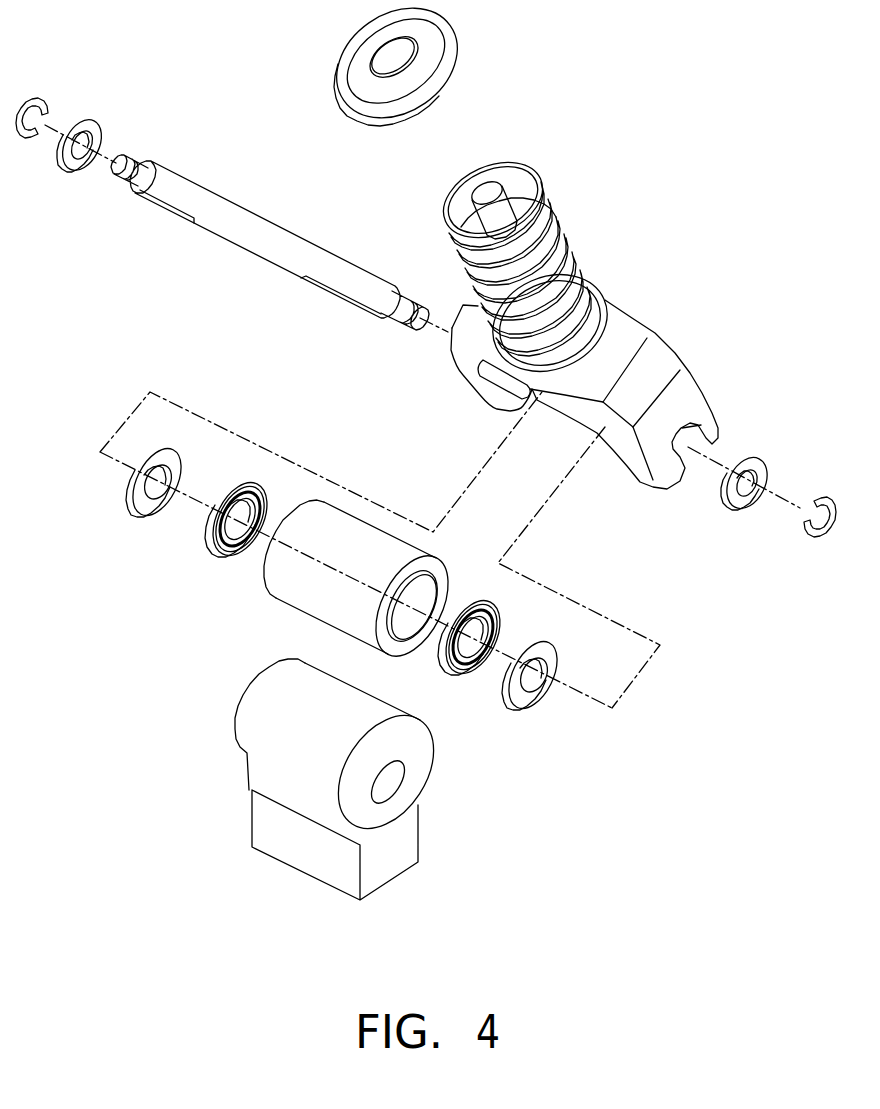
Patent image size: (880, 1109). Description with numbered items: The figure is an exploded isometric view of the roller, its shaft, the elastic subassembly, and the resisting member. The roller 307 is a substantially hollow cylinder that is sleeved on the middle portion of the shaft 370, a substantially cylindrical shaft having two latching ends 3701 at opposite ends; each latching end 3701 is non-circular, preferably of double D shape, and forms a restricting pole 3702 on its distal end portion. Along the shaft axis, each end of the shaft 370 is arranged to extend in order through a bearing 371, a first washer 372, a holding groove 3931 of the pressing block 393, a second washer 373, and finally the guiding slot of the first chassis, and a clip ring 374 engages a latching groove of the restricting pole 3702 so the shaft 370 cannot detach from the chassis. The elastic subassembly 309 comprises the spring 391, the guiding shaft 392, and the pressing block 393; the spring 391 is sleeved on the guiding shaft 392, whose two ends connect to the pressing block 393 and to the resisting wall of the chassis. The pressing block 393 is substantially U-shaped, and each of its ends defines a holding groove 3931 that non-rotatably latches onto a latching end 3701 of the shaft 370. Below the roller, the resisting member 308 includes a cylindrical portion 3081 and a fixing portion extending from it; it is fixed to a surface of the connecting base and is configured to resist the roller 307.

The roller 307 is at (292, 575).
The resisting member 308 is at (283, 779).
The cylindrical portion 3081 is at (268, 765).
The elastic subassembly 309 is at (633, 70).
The shaft 370 is at (248, 255).
The latching end 3701 is at (167, 208).
The restricting pole 3702 is at (392, 318).
The bearing 371 is at (210, 540).
The first washer 372 is at (137, 508).
The second washer 373 is at (741, 460).
The clip ring 374 is at (817, 540).
The spring 391 is at (550, 223).
The guiding shaft 392 is at (488, 192).
The pressing block 393 is at (632, 373).
The holding groove 3931 is at (690, 447).